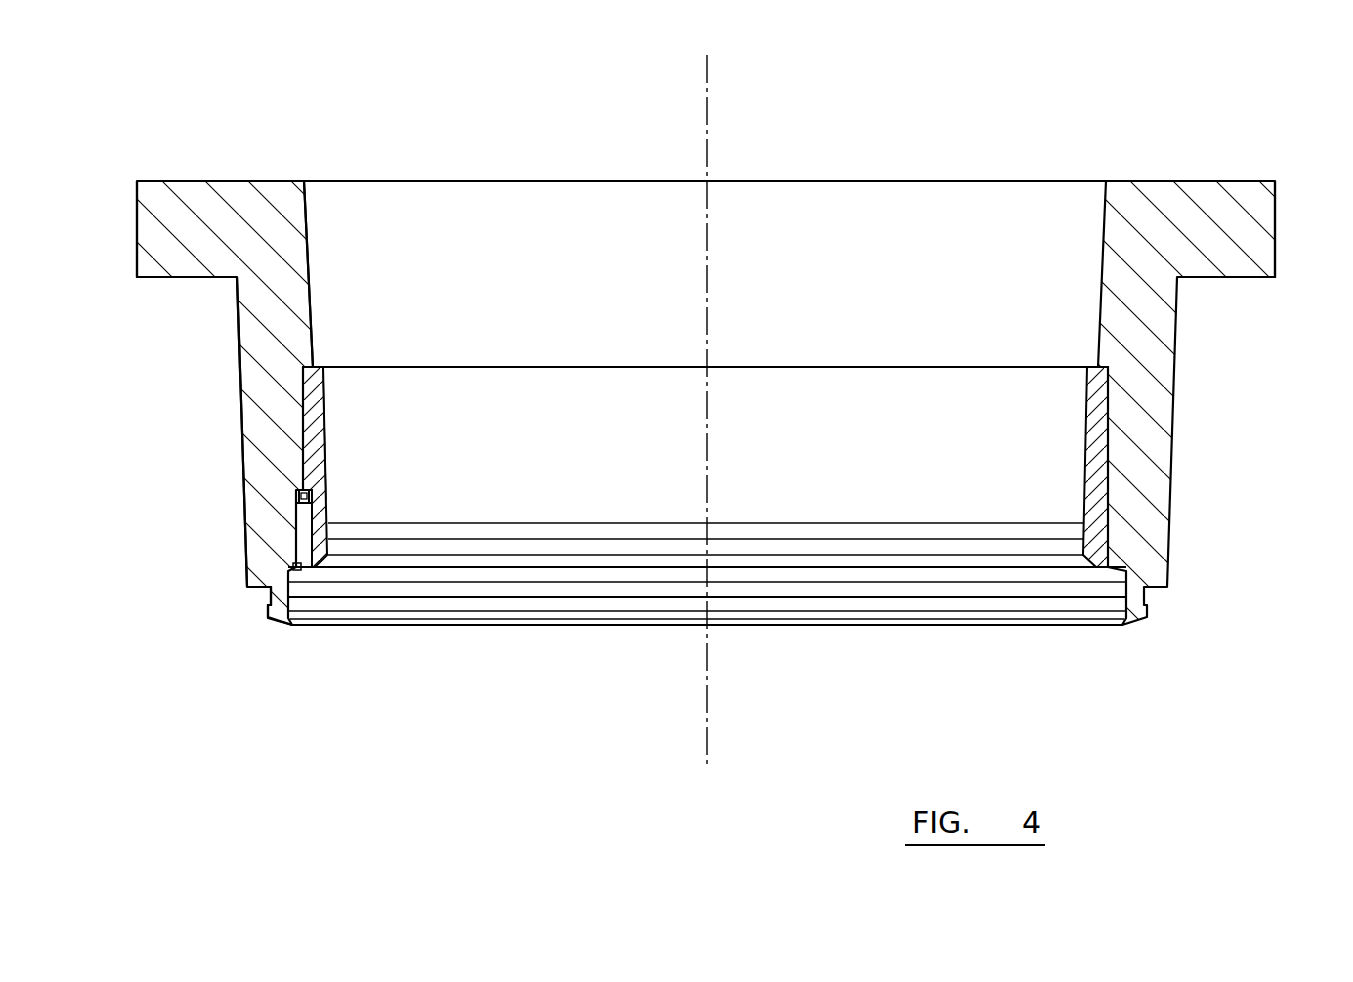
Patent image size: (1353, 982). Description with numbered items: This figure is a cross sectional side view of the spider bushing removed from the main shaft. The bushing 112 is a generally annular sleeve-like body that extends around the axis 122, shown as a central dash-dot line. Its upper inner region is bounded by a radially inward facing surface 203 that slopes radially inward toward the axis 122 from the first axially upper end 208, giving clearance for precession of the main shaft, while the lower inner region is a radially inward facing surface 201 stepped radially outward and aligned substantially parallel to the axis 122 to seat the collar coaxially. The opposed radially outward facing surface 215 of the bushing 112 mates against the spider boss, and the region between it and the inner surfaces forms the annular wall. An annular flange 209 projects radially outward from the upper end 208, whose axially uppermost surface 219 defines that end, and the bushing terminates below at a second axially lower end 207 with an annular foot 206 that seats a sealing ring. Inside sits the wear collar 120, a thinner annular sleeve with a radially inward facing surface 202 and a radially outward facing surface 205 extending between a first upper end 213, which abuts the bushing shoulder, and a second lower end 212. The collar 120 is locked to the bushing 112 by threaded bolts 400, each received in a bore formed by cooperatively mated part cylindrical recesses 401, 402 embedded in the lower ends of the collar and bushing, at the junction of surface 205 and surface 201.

The bushing 112 is at (1143, 400).
The wear collar 120 is at (1096, 481).
The axis 122 is at (707, 100).
The radially inward facing surface 201 is at (305, 423).
The radially inward facing surface 202 is at (325, 395).
The radially inward facing surface 203 is at (308, 252).
The radially outward facing surface 205 is at (302, 437).
The annular foot 206 is at (289, 626).
The second axially lower end 207 is at (243, 553).
The first axially upper end 208 is at (231, 178).
The annular flange 209 is at (170, 253).
The second lower end 212 is at (820, 572).
The first upper end 213 is at (878, 366).
The radially outward facing surface 215 is at (241, 372).
The axially uppermost surface 219 is at (1150, 180).
The threaded bolt 400 is at (300, 537).
The part cylindrical recess 401 is at (311, 496).
The part cylindrical recess 402 is at (299, 492).